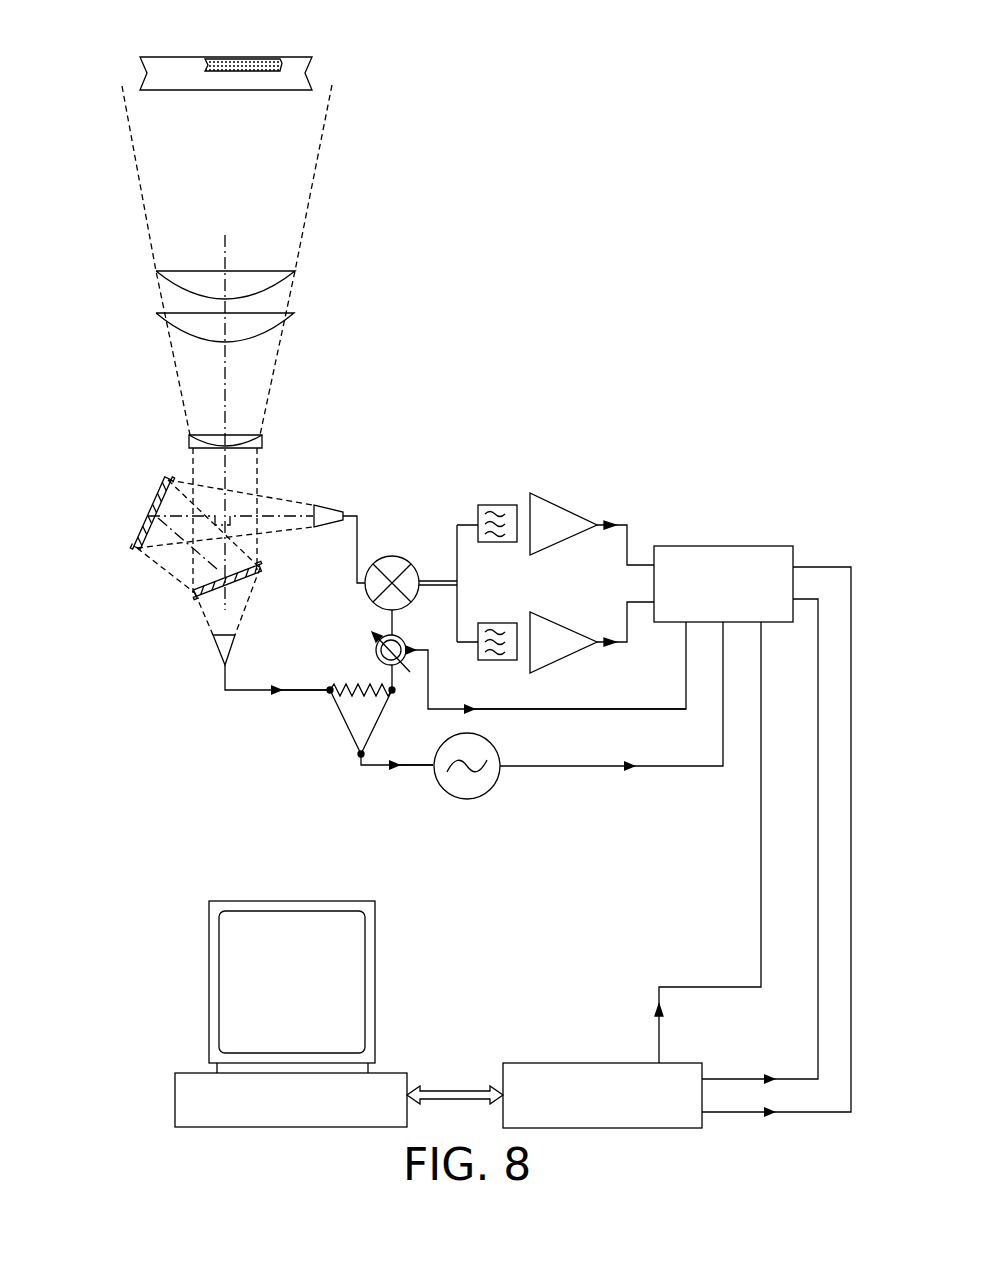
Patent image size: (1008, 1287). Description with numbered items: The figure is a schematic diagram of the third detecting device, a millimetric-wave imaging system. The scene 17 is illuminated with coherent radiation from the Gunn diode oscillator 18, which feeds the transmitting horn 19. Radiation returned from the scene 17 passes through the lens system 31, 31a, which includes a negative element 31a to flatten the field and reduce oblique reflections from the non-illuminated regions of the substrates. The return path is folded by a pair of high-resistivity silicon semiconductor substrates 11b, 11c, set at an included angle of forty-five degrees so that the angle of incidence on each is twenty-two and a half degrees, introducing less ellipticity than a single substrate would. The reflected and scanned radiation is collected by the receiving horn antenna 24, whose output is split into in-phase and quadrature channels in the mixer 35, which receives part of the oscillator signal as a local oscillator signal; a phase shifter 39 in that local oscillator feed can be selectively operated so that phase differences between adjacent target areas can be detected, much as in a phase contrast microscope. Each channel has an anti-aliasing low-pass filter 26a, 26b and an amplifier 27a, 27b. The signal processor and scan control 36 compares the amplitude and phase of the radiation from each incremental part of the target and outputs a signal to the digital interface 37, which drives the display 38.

The scene 17 is at (170, 57).
The lens system 31 is at (305, 271).
The negative element 31a is at (189, 442).
The high-resistivity silicon semiconductor substrate 11c is at (150, 508).
The high-resistivity silicon semiconductor substrate 11b is at (233, 587).
The receiving horn antenna 24 is at (331, 507).
The mixer 35 is at (392, 556).
The phase shifter 39 is at (403, 641).
The anti-aliasing low-pass filter 26a is at (499, 505).
The anti-aliasing low-pass filter 26b is at (499, 623).
The amplifier 27a is at (562, 502).
The amplifier 27b is at (562, 620).
The signal processor and scan control 36 is at (724, 546).
The transmitting horn 19 is at (214, 647).
The Gunn diode oscillator 18 is at (499, 753).
The display 38 is at (377, 908).
The digital interface 37 is at (604, 1063).